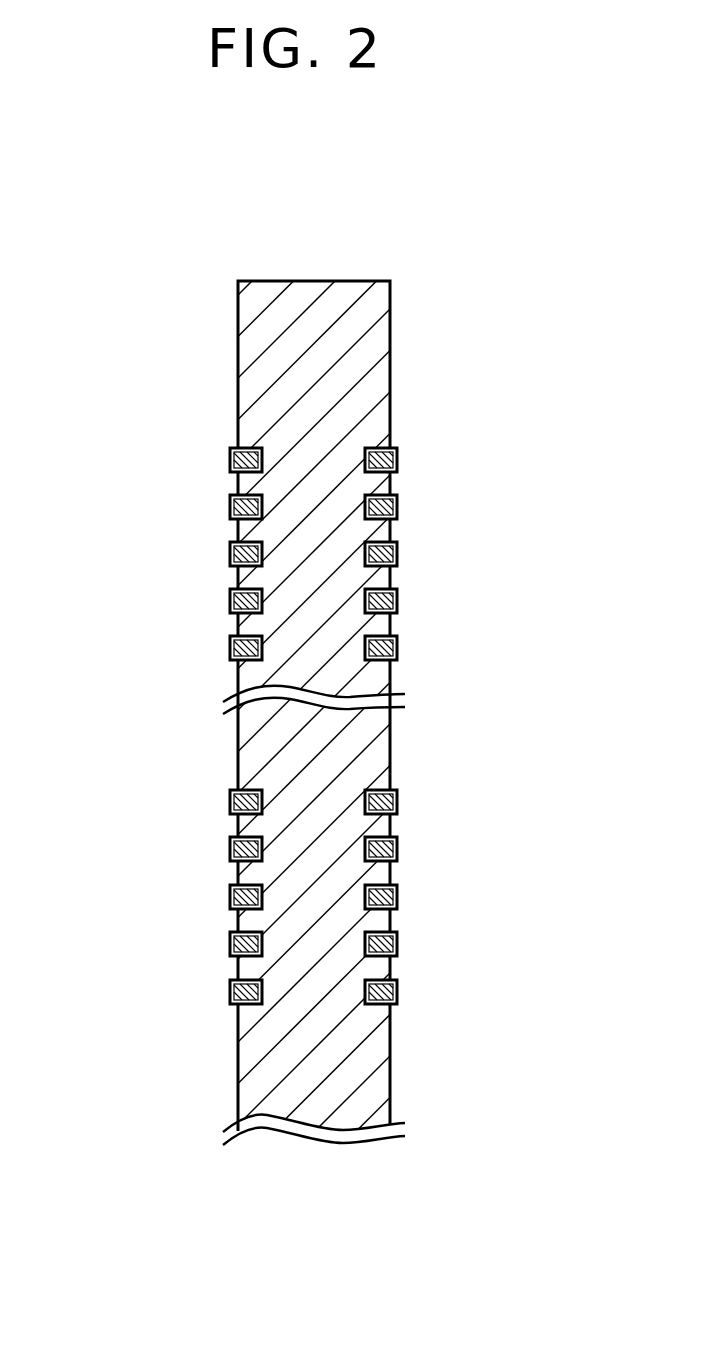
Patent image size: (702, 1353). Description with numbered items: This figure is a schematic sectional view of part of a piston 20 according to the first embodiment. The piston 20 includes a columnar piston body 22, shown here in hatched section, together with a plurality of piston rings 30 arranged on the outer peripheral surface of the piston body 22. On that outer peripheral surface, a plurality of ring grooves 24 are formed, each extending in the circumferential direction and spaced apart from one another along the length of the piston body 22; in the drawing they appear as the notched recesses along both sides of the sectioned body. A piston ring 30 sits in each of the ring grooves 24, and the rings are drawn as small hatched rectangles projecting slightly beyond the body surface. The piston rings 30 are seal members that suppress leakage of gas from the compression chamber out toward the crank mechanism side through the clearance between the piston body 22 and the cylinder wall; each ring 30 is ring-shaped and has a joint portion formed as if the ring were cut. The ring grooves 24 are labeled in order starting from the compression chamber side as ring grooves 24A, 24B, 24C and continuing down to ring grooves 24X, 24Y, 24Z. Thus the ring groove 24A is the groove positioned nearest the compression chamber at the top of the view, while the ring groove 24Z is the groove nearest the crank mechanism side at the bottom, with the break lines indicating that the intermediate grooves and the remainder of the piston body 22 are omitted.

The piston 20 is at (181, 256).
The piston body 22 is at (390, 320).
The ring grooves 24 is at (381, 725).
The ring groove 24A is at (397, 458).
The ring groove 24B is at (397, 505).
The ring groove 24C is at (397, 553).
The ring groove 24X is at (397, 897).
The ring groove 24Y is at (397, 944).
The ring groove 24Z is at (397, 992).
The piston rings 30 is at (230, 555).